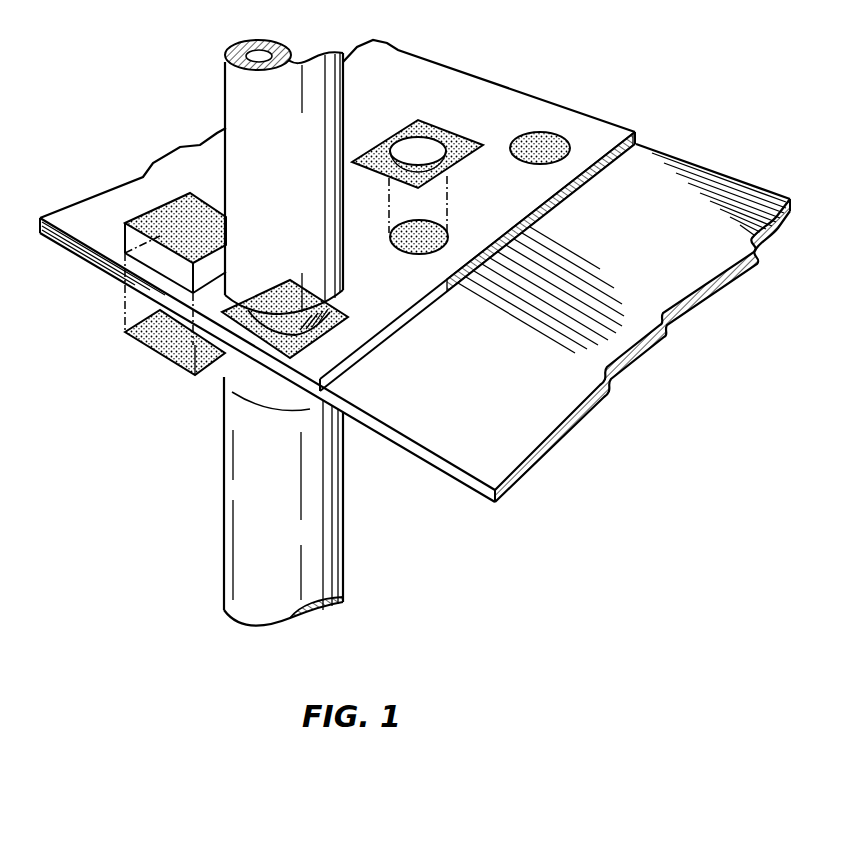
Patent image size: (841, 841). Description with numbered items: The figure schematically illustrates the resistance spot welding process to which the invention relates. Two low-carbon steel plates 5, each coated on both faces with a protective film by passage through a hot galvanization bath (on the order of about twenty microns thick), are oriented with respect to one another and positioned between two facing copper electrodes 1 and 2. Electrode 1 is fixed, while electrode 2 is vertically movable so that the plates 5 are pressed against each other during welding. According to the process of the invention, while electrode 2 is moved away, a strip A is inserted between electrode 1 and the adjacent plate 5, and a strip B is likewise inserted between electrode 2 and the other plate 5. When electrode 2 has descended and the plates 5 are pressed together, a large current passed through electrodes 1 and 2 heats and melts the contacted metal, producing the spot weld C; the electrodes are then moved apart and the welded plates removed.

The electrode 1 is at (222, 508).
The electrode 2 is at (242, 103).
The steel plate 5 is at (443, 83).
The strip A is at (165, 343).
The strip B is at (195, 210).
The spot weld C is at (547, 133).